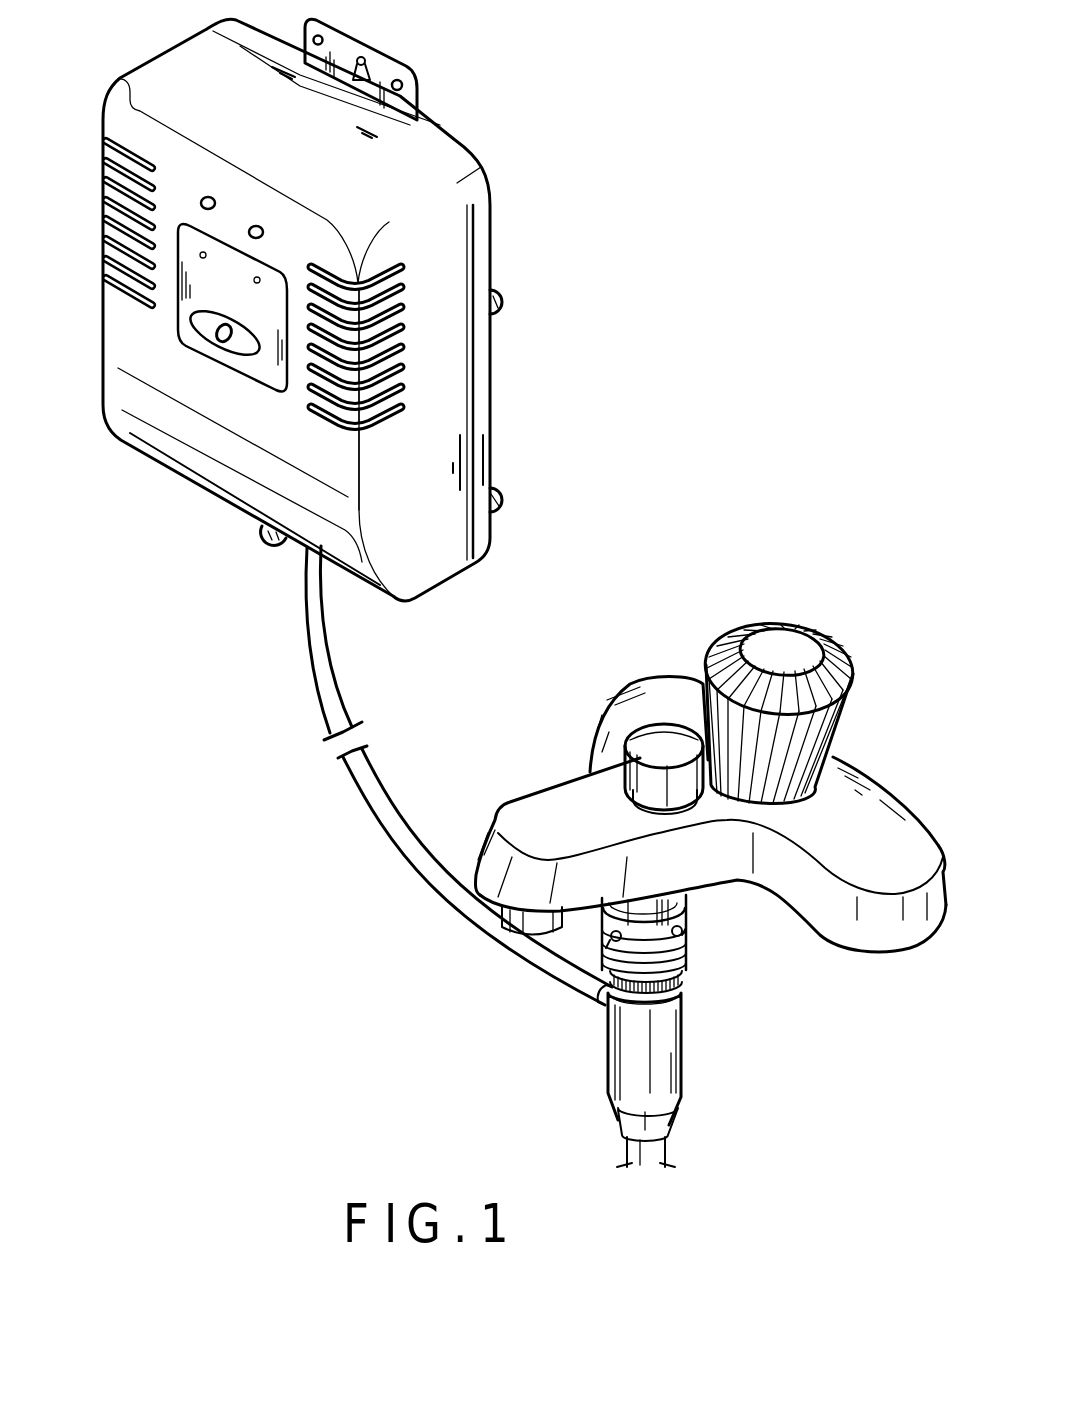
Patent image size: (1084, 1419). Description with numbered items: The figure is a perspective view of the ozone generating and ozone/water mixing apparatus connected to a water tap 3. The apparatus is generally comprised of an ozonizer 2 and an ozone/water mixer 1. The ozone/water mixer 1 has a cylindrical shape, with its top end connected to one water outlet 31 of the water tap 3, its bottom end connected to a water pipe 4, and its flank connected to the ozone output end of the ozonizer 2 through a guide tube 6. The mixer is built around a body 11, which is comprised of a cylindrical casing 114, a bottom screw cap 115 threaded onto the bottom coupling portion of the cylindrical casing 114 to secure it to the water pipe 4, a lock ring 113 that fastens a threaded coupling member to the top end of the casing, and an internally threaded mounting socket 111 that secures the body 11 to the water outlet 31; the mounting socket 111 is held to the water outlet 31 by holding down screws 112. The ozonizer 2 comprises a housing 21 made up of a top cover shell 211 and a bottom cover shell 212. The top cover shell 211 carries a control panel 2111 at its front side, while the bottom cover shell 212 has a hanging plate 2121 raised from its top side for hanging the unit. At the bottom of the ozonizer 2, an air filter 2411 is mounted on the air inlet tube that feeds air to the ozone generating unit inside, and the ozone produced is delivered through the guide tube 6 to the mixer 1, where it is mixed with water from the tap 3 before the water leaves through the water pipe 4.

The ozone/water mixer 1 is at (578, 1100).
The body 11 is at (700, 1028).
The mounting socket 111 is at (610, 980).
The holding down screws 112 is at (603, 940).
The lock ring 113 is at (683, 973).
The cylindrical casing 114 is at (667, 1077).
The bottom screw cap 115 is at (663, 1123).
The ozonizer 2 is at (552, 258).
The housing 21 is at (470, 135).
The top cover shell 211 is at (445, 400).
The bottom cover shell 212 is at (482, 218).
The hanging plate 2121 is at (380, 74).
The control panel 2111 is at (243, 348).
The air filter 2411 is at (272, 545).
The water tap 3 is at (582, 808).
The water outlet 31 is at (650, 908).
The water pipe 4 is at (663, 1155).
The guide tube 6 is at (330, 693).